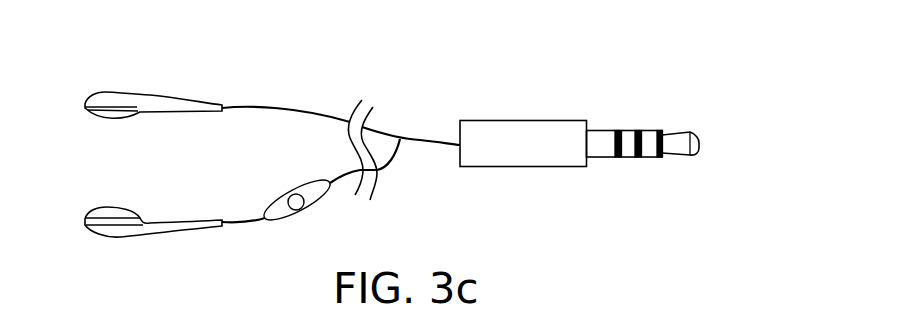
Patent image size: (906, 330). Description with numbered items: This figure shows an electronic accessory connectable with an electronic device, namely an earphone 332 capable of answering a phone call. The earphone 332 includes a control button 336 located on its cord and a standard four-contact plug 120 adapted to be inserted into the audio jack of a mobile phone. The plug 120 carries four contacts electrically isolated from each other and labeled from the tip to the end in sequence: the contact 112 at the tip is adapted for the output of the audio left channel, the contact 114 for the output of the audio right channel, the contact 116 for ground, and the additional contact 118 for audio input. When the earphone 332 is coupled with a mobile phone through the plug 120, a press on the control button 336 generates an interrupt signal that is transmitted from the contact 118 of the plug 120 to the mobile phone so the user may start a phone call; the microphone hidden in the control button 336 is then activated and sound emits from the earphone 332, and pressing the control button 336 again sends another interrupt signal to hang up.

The earphone 332 is at (205, 101).
The control button 336 is at (298, 206).
The plug 120 is at (520, 120).
The contact 118 is at (594, 140).
The contact 116 is at (630, 143).
The contact 114 is at (650, 142).
The contact 112 is at (685, 157).